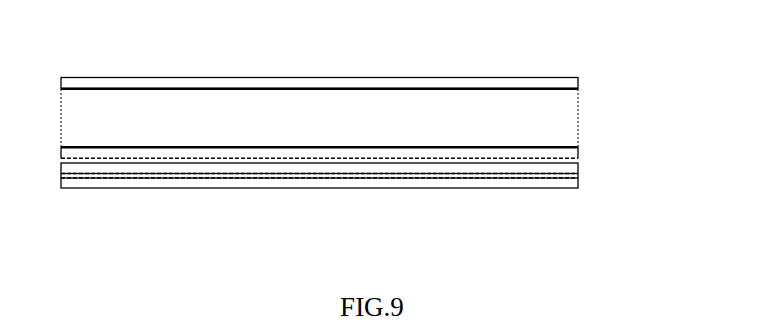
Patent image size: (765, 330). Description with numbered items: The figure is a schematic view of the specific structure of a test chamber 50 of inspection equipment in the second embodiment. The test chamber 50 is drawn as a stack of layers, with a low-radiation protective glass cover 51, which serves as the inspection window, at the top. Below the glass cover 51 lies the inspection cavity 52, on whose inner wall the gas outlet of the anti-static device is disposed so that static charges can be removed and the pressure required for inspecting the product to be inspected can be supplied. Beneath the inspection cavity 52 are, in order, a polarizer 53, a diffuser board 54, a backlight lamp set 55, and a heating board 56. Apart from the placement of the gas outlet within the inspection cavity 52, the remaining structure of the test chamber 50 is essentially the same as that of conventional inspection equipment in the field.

The test chamber 50 is at (86, 46).
The low-radiation protective glass cover 51 is at (576, 83).
The inspection cavity 52 is at (570, 111).
The polarizer 53 is at (573, 153).
The diffuser board 54 is at (573, 167).
The backlight lamp set 55 is at (573, 177).
The heating board 56 is at (565, 182).